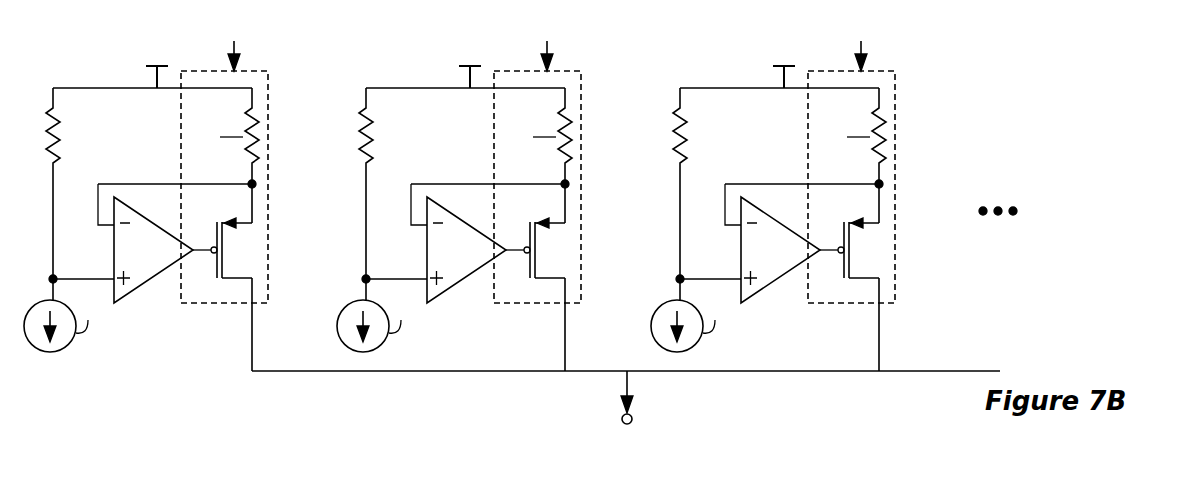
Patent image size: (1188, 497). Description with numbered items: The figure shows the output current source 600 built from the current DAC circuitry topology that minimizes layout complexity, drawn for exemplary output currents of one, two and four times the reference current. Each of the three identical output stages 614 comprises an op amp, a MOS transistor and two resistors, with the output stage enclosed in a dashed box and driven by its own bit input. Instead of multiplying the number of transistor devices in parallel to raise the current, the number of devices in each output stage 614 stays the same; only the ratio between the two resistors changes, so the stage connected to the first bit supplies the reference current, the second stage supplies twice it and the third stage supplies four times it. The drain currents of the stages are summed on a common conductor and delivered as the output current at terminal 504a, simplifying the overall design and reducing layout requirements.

The output current source 600 is at (934, 58).
The output stage 614 is at (268, 80).
The output current terminal 504a is at (632, 425).